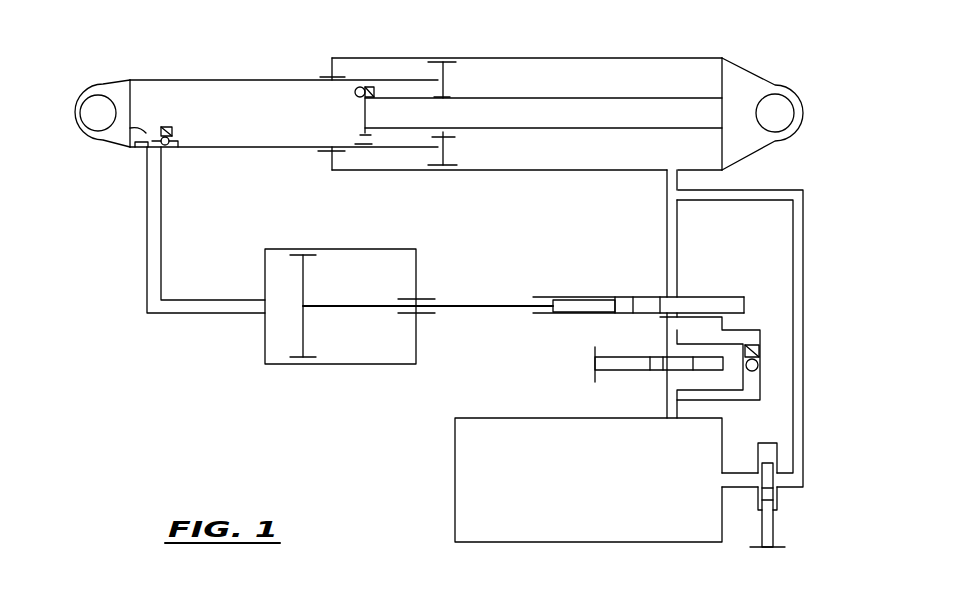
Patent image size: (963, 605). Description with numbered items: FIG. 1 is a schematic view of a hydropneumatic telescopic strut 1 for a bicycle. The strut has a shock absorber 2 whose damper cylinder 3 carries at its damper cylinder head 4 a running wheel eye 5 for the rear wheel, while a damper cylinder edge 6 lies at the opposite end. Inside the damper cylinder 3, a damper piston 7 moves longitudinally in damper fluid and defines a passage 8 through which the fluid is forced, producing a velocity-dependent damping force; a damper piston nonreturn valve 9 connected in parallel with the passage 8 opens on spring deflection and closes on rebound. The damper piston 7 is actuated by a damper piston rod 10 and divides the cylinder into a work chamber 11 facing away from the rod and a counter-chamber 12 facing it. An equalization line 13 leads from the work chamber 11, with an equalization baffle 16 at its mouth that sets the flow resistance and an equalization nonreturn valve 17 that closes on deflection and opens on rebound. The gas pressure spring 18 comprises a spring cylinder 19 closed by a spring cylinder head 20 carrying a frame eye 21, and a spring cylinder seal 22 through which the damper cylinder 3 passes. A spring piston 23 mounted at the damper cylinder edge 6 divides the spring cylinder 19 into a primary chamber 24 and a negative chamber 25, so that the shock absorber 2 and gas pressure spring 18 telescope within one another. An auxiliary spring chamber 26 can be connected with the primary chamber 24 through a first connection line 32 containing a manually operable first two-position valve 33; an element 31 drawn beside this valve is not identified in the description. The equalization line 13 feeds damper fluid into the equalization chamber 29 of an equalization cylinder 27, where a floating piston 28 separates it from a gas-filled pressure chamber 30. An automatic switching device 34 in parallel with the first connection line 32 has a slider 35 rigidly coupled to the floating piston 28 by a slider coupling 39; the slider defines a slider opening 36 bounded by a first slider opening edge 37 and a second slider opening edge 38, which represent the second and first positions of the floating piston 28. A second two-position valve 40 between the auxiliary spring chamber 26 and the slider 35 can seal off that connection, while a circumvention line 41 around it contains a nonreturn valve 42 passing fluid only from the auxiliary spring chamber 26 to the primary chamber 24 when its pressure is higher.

The hydropneumatic telescopic strut 1 is at (301, 428).
The shock absorber 2 is at (248, 46).
The damper cylinder 3 is at (160, 80).
The damper cylinder head 4 is at (130, 80).
The running wheel eye 5 is at (75, 112).
The damper cylinder edge 6 is at (440, 80).
The damper piston 7 is at (363, 115).
The passage 8 is at (385, 145).
The damper piston nonreturn valve 9 is at (374, 90).
The damper piston rod 10 is at (530, 97).
The work chamber 11 is at (285, 116).
The counter-chamber 12 is at (450, 145).
The equalization line 13 is at (162, 216).
The equalization baffle 16 is at (132, 128).
The equalization nonreturn valve 17 is at (180, 142).
The gas pressure spring 18 is at (654, 37).
The spring cylinder 19 is at (585, 58).
The spring cylinder head 20 is at (722, 58).
The frame eye 21 is at (805, 104).
The spring cylinder seal 22 is at (325, 77).
The spring piston 23 is at (455, 72).
The primary chamber 24 is at (577, 163).
The negative chamber 25 is at (413, 162).
The auxiliary spring chamber 26 is at (569, 489).
The equalization cylinder 27 is at (340, 249).
The floating piston 28 is at (303, 278).
The equalization chamber 29 is at (296, 344).
The pressure chamber 30 is at (380, 357).
The valve 31 is at (800, 512).
The first connection line 32 is at (805, 338).
The first two-position valve 33 is at (762, 527).
The automatic switching device 34 is at (640, 267).
The slider 35 is at (733, 299).
The slider opening 36 is at (630, 306).
The first slider opening edge 37 is at (630, 297).
The second slider opening edge 38 is at (653, 304).
The slider coupling 39 is at (447, 303).
The second two-position valve 40 is at (596, 373).
The circumvention line 41 is at (732, 401).
The nonreturn valve 42 is at (766, 346).